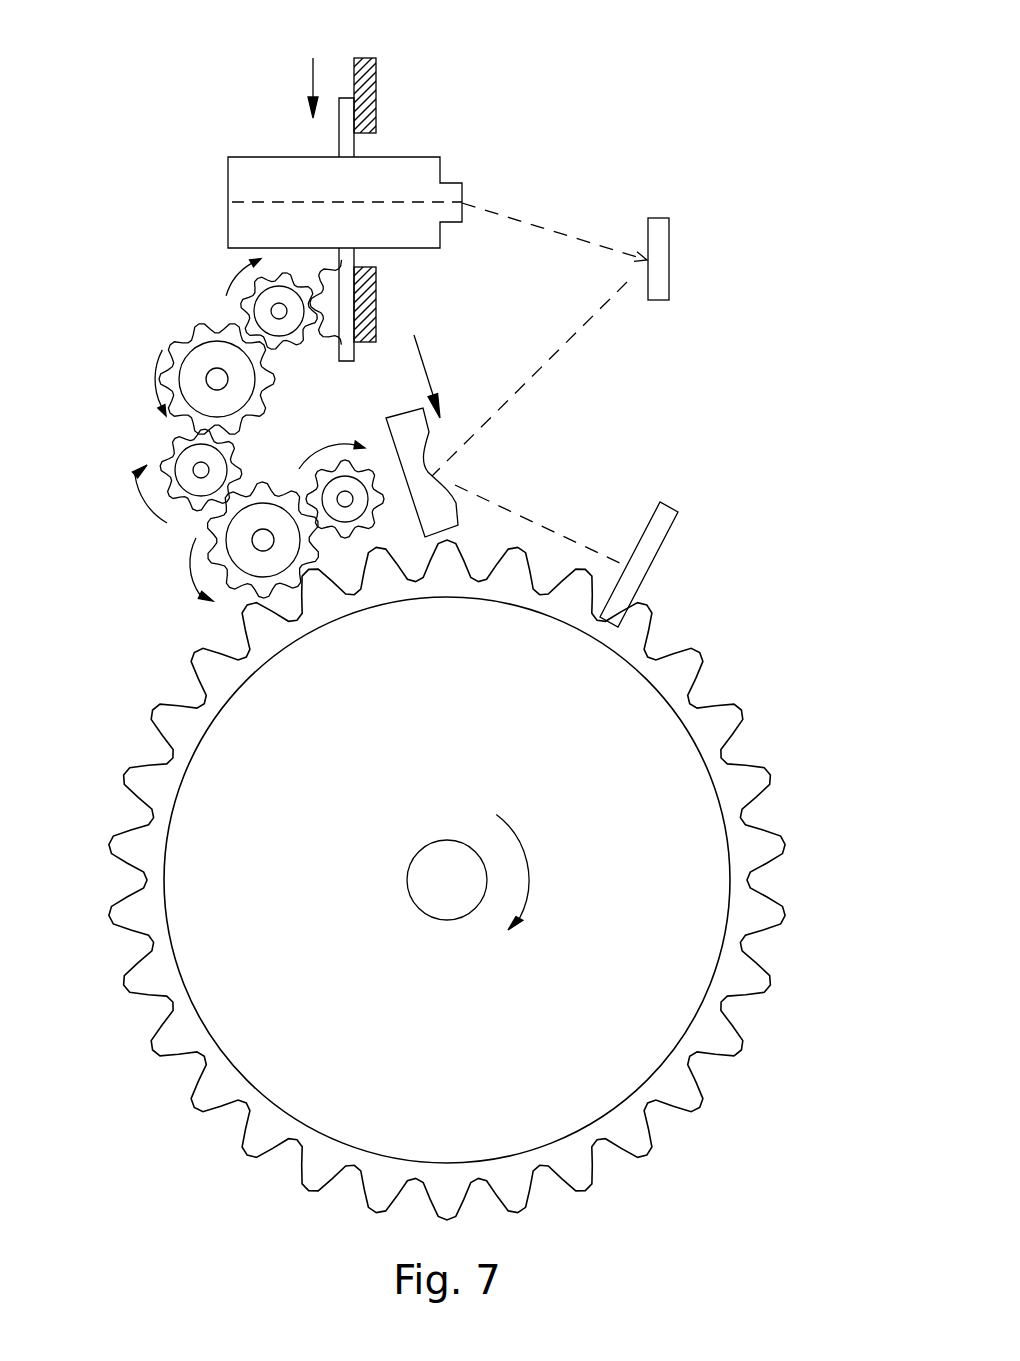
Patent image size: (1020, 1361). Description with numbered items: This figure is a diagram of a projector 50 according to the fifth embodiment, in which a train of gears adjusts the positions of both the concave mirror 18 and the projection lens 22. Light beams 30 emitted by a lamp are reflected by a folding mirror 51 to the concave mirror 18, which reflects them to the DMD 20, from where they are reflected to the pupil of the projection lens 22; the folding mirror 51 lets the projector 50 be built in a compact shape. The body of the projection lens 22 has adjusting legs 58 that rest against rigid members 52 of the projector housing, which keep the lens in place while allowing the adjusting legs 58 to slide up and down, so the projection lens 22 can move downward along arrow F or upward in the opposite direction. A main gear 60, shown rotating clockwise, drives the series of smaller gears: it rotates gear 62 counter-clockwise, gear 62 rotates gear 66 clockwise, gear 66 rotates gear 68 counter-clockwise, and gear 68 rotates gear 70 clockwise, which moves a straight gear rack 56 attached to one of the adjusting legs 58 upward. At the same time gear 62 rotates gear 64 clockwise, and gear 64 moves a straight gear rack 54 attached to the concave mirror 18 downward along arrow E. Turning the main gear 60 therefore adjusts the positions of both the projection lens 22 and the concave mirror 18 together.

The projector 50 is at (757, 95).
The projection lens 22 is at (228, 183).
The adjusting legs 58 is at (339, 138).
The rigid members 52 is at (376, 95).
The straight gear rack 56 is at (332, 338).
The gear 70 is at (257, 298).
The gear 68 is at (253, 330).
The gear 66 is at (172, 460).
The gear 62 is at (205, 600).
The gear 64 is at (330, 468).
The straight gear rack 54 is at (386, 450).
The concave mirror 18 is at (415, 376).
The DMD 20 is at (660, 218).
The light beams 30 is at (540, 228).
The folding mirror 51 is at (678, 502).
The main gear 60 is at (752, 763).
The arrow E is at (423, 362).
The arrow F is at (312, 75).